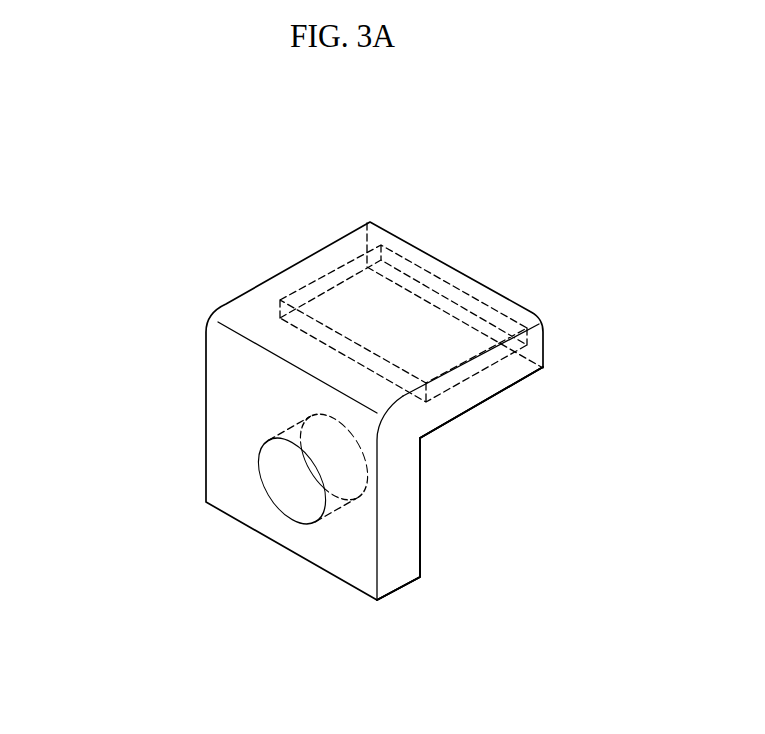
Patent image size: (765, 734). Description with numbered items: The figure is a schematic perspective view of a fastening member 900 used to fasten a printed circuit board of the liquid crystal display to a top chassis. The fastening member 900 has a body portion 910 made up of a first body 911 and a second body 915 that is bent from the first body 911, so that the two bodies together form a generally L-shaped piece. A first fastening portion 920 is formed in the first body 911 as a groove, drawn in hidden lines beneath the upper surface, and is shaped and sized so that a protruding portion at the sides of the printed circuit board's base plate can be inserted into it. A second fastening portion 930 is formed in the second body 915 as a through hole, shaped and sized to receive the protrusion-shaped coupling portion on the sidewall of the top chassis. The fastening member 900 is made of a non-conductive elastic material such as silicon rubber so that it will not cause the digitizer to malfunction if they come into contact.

The fastening member 900 is at (492, 208).
The body portion 910 is at (543, 436).
The first body 911 is at (448, 410).
The second body 915 is at (412, 512).
The first fastening portion 920 is at (484, 313).
The second fastening portion 930 is at (280, 466).